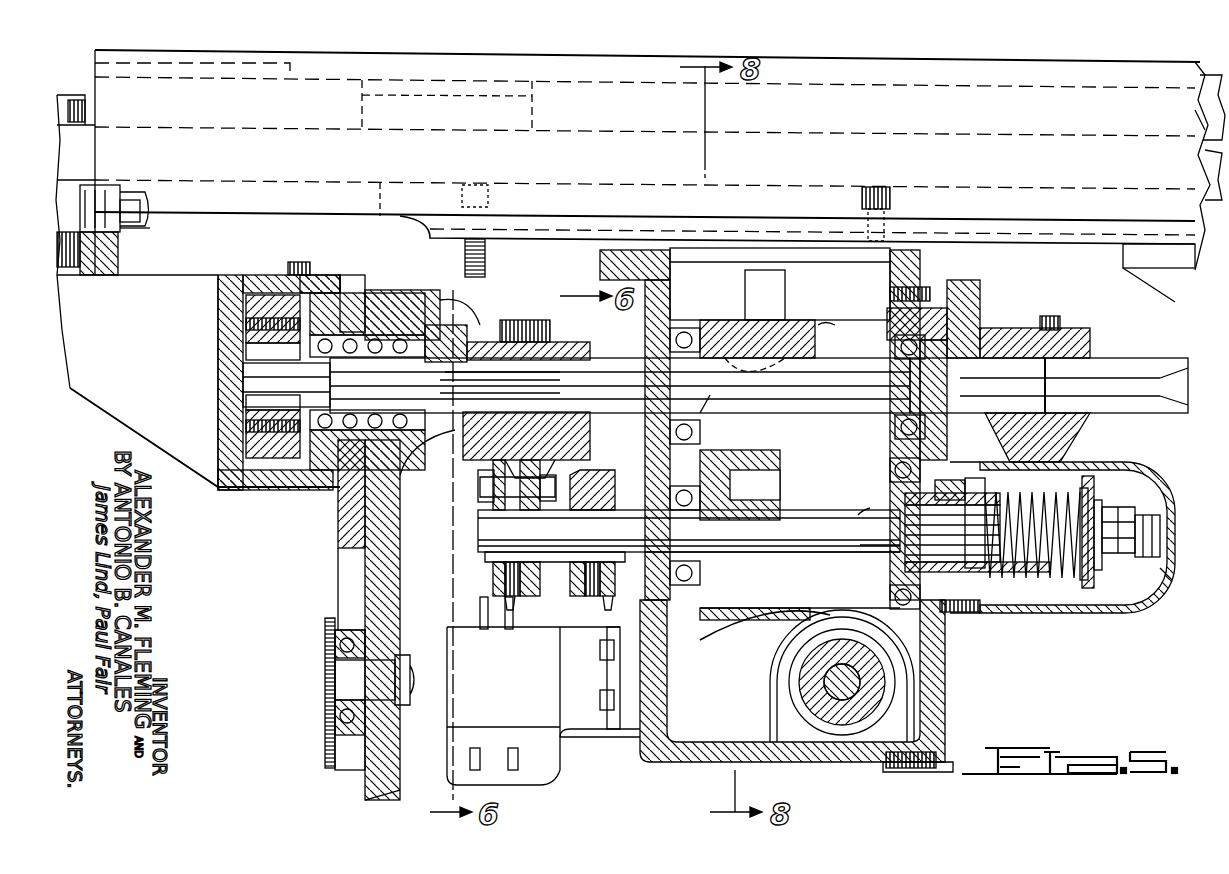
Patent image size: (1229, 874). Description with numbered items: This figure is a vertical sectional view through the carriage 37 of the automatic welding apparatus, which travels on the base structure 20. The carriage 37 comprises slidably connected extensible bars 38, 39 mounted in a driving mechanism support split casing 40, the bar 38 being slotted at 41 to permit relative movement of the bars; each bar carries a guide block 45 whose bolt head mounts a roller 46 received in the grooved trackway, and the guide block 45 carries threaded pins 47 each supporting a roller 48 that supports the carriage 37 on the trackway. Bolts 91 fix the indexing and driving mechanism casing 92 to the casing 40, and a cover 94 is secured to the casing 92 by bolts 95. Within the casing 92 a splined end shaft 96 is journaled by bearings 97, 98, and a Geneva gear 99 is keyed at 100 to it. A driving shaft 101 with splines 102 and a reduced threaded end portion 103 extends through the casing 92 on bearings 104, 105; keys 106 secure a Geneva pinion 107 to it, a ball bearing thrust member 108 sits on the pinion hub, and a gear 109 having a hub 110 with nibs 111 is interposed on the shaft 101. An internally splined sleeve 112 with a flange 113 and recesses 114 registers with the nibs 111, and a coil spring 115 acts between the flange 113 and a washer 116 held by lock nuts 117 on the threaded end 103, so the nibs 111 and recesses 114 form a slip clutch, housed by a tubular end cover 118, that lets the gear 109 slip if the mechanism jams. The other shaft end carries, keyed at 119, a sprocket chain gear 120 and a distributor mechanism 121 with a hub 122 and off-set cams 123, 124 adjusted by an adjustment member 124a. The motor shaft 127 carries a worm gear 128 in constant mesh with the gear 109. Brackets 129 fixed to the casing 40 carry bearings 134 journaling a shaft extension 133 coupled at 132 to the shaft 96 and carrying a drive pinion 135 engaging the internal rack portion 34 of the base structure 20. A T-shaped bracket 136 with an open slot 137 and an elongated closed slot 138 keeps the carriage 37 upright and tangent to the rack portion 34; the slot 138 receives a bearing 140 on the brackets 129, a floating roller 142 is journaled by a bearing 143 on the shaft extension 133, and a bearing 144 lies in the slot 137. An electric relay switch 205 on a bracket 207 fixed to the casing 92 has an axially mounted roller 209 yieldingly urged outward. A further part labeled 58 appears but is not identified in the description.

The base structure 20 is at (110, 422).
The internal rack portion 34 is at (312, 275).
The carriage 37 is at (860, 62).
The extensible bar 38 is at (85, 138).
The extensible bar 39 is at (1192, 120).
The driving mechanism support split casing 40 is at (1030, 62).
The slot 41 is at (530, 112).
The guide block 45 is at (100, 210).
The roller 46 is at (118, 250).
The threaded pins 47 is at (145, 220).
The roller 48 is at (125, 235).
The plate 58 is at (80, 288).
The bolts 91 is at (892, 200).
The indexing and driving mechanism casing 92 is at (680, 272).
The cover 94 is at (965, 320).
The bolts 95 is at (950, 300).
The splined end shaft 96 is at (830, 365).
The bearing 97 is at (700, 335).
The bearing 98 is at (860, 378).
The Geneva gear 99 is at (790, 312).
The key 100 is at (846, 323).
The driving shaft 101 is at (480, 527).
The splines 102 is at (1040, 613).
The reduced threaded end portion 103 is at (1180, 579).
The bearing 104 is at (668, 525).
The bearing 105 is at (920, 522).
The keys 106 is at (866, 519).
The Geneva pinion 107 is at (875, 545).
The ball bearing thrust member 108 is at (745, 490).
The gear 109 is at (870, 397).
The hub 110 is at (970, 553).
The nibs 111 is at (945, 500).
The internally splined sleeve 112 is at (965, 612).
The flange 113 is at (975, 478).
The recesses 114 is at (1030, 490).
The coil spring 115 is at (1090, 476).
The washer 116 is at (1100, 500).
The lock nuts 117 is at (1125, 518).
The tubular end cover 118 is at (1150, 515).
The key 119 is at (560, 540).
The sprocket chain gear 120 is at (612, 470).
The distributor mechanism 121 is at (472, 502).
The hub 122 is at (520, 510).
The off-set cam 123 is at (485, 560).
The off-set cam 124 is at (540, 472).
The adjustment member 124a is at (478, 487).
The shaft 127 is at (865, 698).
The worm gear 128 is at (880, 668).
The brackets 129 is at (505, 283).
The coupling 132 is at (550, 330).
The shaft extension 133 is at (1170, 365).
The bearings 134 is at (425, 300).
The drive pinion 135 is at (260, 330).
The T-shaped bracket 136 is at (340, 520).
The open slot 137 is at (400, 290).
The elongated closed slot 138 is at (345, 600).
The bearing 140 is at (360, 640).
The floating roller 142 is at (352, 275).
The bearing 143 is at (330, 362).
The bearing 144 is at (385, 410).
The electric relay switch 205 is at (530, 690).
The brackets 207 is at (575, 729).
The axially mounted roller 209 is at (513, 615).